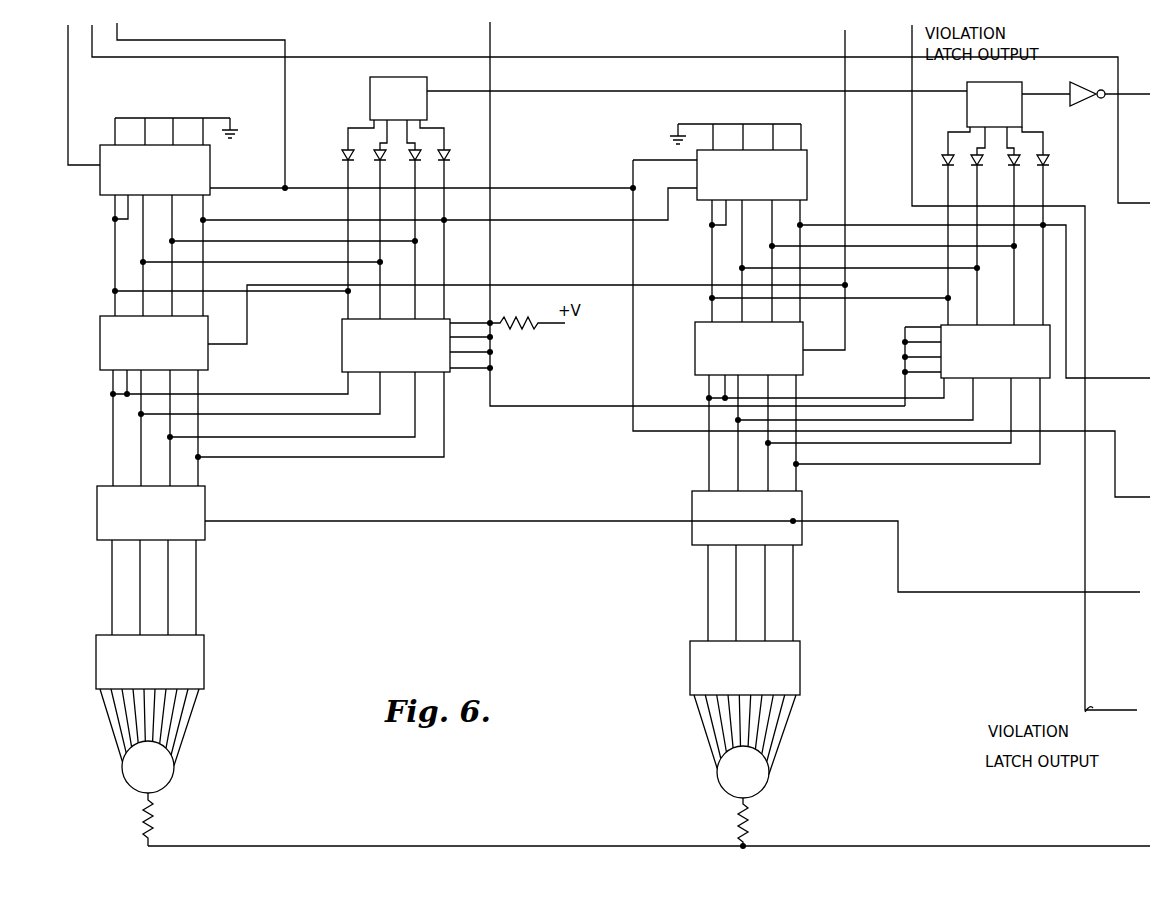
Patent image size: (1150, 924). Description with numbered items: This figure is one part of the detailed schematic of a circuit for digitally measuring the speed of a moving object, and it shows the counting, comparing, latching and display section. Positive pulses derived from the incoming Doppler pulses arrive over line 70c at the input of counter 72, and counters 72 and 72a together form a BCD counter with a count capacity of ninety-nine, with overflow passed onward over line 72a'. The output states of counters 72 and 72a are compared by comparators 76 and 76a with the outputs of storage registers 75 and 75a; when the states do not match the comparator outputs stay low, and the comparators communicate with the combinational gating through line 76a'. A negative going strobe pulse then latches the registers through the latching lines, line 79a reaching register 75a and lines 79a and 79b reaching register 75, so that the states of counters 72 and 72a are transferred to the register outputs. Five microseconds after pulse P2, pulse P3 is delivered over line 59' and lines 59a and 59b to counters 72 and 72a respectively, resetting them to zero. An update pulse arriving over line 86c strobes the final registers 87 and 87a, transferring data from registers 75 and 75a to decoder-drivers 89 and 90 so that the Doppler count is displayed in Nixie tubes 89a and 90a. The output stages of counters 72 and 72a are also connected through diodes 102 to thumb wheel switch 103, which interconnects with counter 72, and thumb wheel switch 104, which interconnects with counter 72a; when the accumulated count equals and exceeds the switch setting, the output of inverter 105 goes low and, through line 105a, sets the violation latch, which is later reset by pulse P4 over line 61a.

The line 70c is at (68, 57).
The line 59' is at (202, 102).
The line 61a is at (92, 40).
The counter 72 is at (155, 170).
The line 59a is at (238, 184).
The line 59b is at (572, 186).
The thumb wheel switch 103 is at (668, 98).
The diodes 102 is at (342, 154).
The line 76a' is at (697, 213).
The line 79a is at (845, 38).
The counter 72a is at (752, 175).
The thumb wheel switch 104 is at (994, 104).
The inverter 105 is at (1063, 105).
The line 105a is at (1136, 100).
The storage register 75 is at (154, 343).
The line 79b is at (228, 348).
The comparator 76 is at (396, 345).
The storage register 75a is at (749, 348).
The comparator 76a is at (995, 351).
The line 72a' is at (975, 300).
The final register 87 is at (151, 513).
The final register 87a is at (747, 518).
The line 86c is at (1118, 592).
The decoder-driver 89 is at (150, 662).
The decoder-driver 90 is at (745, 668).
The Nixie tube 89a is at (149, 767).
The Nixie tube 90a is at (745, 770).